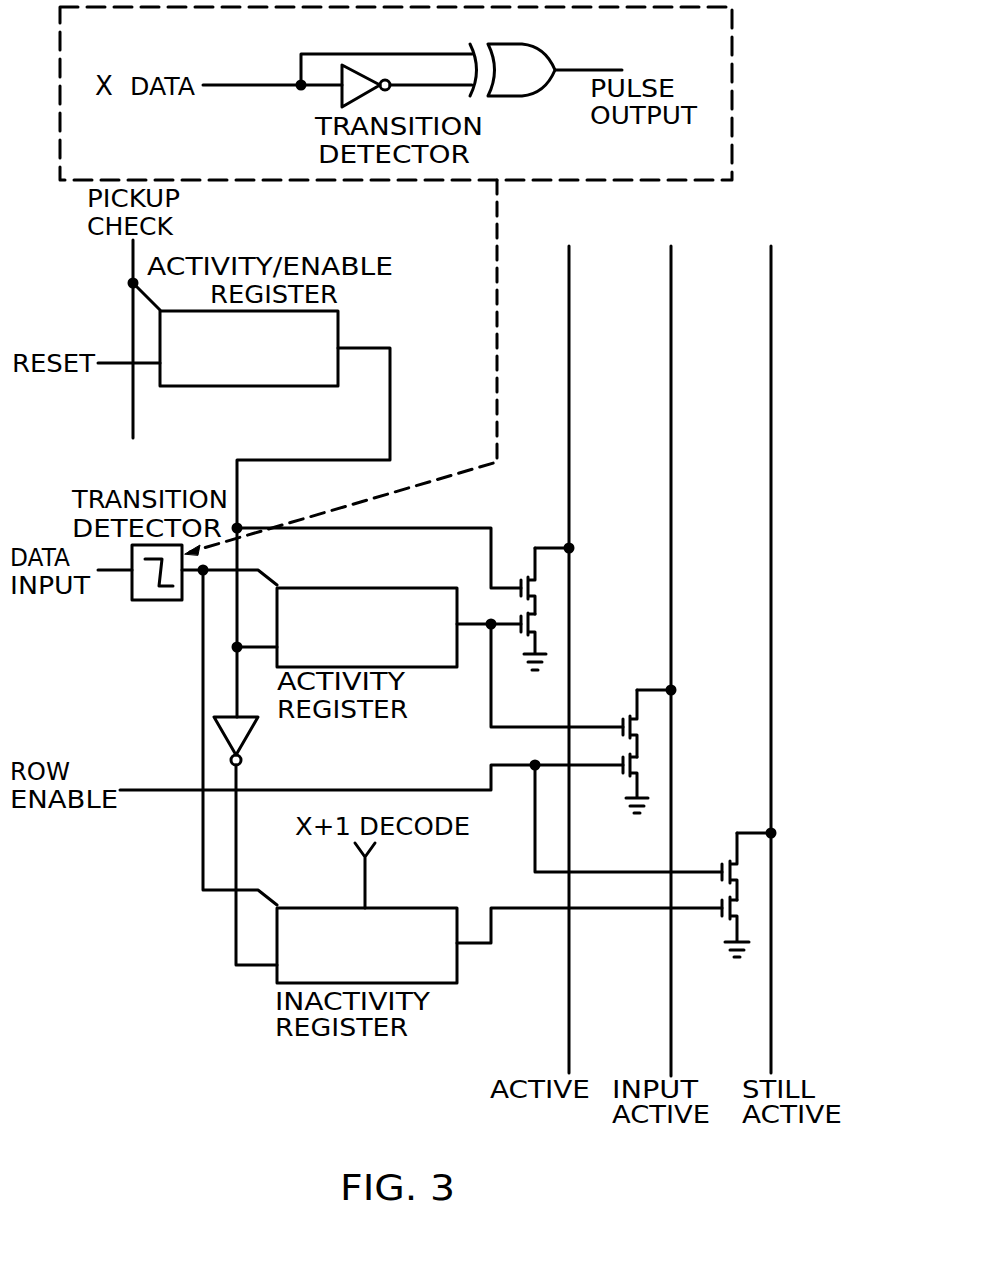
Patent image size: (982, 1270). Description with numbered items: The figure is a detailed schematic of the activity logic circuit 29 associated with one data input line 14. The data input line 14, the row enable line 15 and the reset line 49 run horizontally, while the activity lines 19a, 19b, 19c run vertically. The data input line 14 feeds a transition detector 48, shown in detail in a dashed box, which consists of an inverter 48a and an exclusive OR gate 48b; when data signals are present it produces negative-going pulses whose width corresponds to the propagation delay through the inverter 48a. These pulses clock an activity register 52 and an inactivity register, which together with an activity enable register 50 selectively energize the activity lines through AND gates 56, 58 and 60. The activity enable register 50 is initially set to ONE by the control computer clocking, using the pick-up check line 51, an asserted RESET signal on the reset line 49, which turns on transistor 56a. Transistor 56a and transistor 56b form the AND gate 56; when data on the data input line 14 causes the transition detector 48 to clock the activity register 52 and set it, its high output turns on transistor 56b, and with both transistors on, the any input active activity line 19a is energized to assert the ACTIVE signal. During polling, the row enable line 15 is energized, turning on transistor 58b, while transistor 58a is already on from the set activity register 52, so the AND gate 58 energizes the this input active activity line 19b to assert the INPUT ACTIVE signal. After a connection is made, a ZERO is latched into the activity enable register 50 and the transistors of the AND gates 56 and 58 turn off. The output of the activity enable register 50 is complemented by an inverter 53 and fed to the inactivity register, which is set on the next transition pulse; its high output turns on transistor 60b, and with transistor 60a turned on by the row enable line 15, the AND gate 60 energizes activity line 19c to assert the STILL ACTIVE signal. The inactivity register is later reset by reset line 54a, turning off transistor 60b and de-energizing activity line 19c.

The data input line 14 is at (250, 85).
The inverter 48a is at (370, 94).
The exclusive OR gate 48b is at (551, 63).
The pick-up check line 51 is at (133, 260).
The reset line 49 is at (113, 362).
The activity enable register 50 is at (295, 360).
The any input active activity line 19a is at (569, 246).
The this input active activity line 19b is at (671, 246).
The activity line 19c is at (771, 246).
The transition detector 48 is at (146, 600).
The AND gate 56 is at (568, 588).
The transistor 56a is at (541, 590).
The transistor 56b is at (541, 623).
The activity register 52 is at (419, 639).
The AND gate 58 is at (655, 735).
The transistor 58a is at (642, 733).
The transistor 58b is at (642, 771).
The inverter 53 is at (246, 735).
The row enable line 15 is at (165, 788).
The AND gate 60 is at (763, 875).
The transistor 60a is at (740, 878).
The transistor 60b is at (740, 913).
The reset line 54a is at (441, 969).
The activity logic circuit 29 is at (119, 1005).